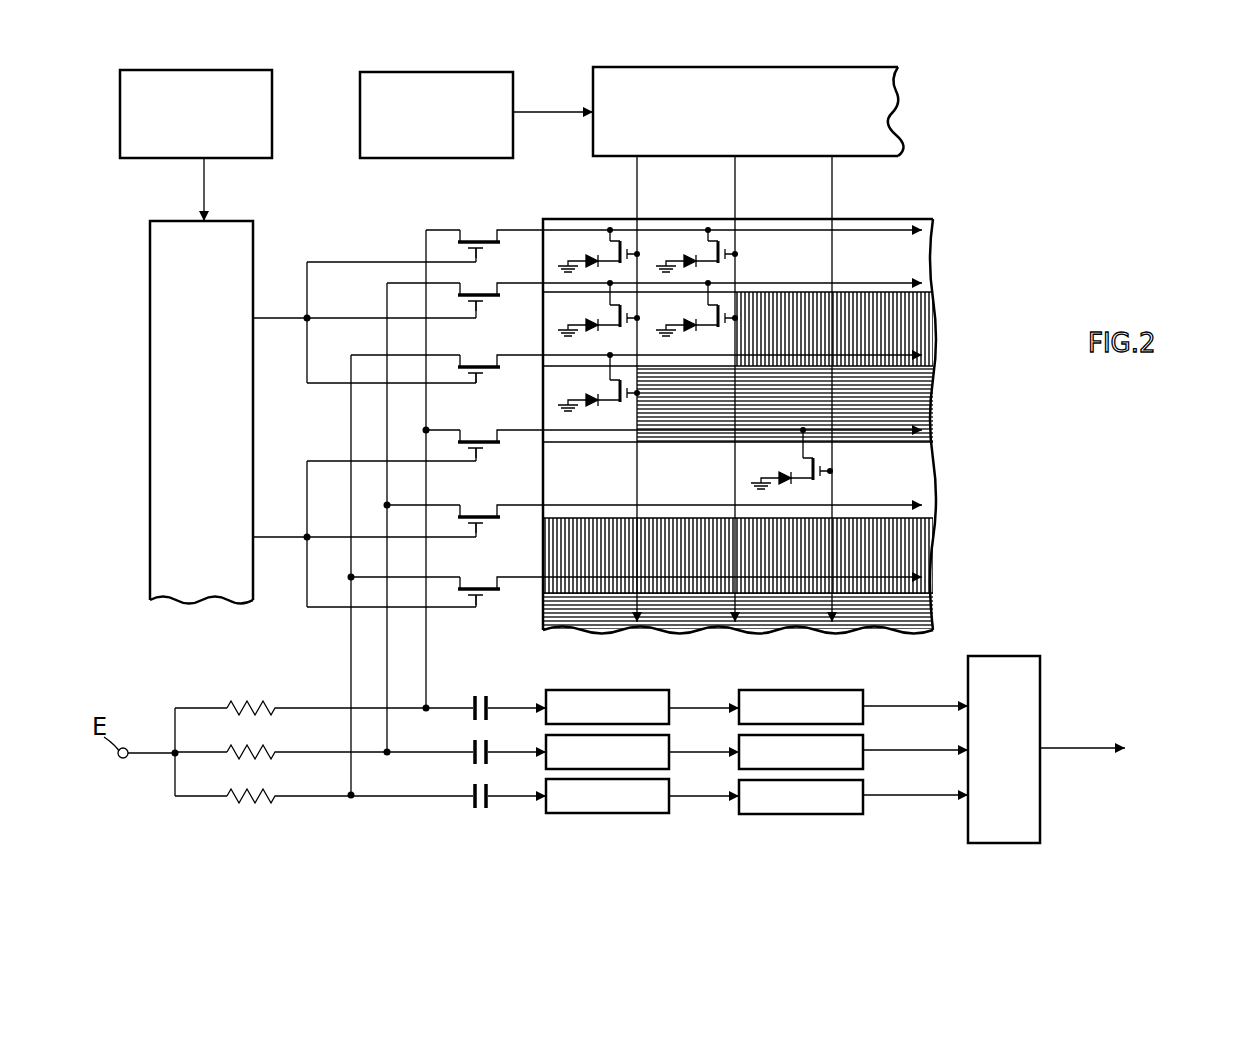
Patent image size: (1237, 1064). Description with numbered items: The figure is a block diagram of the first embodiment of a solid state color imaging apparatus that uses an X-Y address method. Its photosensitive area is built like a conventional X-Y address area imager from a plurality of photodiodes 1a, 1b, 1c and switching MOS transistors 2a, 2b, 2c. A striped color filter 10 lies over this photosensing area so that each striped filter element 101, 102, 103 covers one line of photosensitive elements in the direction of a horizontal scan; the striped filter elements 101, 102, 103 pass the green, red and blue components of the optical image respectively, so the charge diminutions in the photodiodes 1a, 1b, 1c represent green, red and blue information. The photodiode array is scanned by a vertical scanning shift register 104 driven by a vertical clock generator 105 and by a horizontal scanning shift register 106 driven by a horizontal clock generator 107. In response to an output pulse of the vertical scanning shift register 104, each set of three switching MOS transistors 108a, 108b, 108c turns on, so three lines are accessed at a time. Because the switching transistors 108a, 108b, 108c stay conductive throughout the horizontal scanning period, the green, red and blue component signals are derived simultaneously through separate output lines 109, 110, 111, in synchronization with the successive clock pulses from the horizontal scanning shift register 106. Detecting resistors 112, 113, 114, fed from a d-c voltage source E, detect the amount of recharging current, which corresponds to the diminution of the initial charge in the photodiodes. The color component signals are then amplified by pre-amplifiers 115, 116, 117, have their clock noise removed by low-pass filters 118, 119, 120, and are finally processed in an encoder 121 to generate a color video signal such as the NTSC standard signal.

The striped color filter 10 is at (935, 508).
The photodiode 1a is at (586, 258).
The photodiode 1b is at (582, 334).
The photodiode 1c is at (584, 405).
The switching MOS transistor 2a is at (624, 230).
The switching MOS transistor 2b is at (612, 319).
The switching MOS transistor 2c is at (616, 397).
The striped filter element 101 is at (912, 264).
The striped filter element 102 is at (910, 329).
The striped filter element 103 is at (906, 392).
The vertical scanning shift register 104 is at (241, 217).
The vertical clock generator 105 is at (273, 84).
The horizontal scanning shift register 106 is at (710, 71).
The horizontal clock generator 107 is at (487, 78).
The switching MOS transistor 108a is at (482, 240).
The switching MOS transistor 108b is at (482, 292).
The switching MOS transistor 108c is at (482, 357).
The output line 109 is at (426, 674).
The output line 110 is at (387, 646).
The output line 111 is at (351, 636).
The detecting resistor 112 is at (275, 706).
The detecting resistor 113 is at (275, 750).
The detecting resistor 114 is at (275, 793).
The pre-amplifier 115 is at (668, 694).
The pre-amplifier 116 is at (670, 738).
The pre-amplifier 117 is at (670, 782).
The low-pass filter 118 is at (860, 694).
The low-pass filter 119 is at (862, 738).
The low-pass filter 120 is at (864, 782).
The encoder 121 is at (1023, 656).